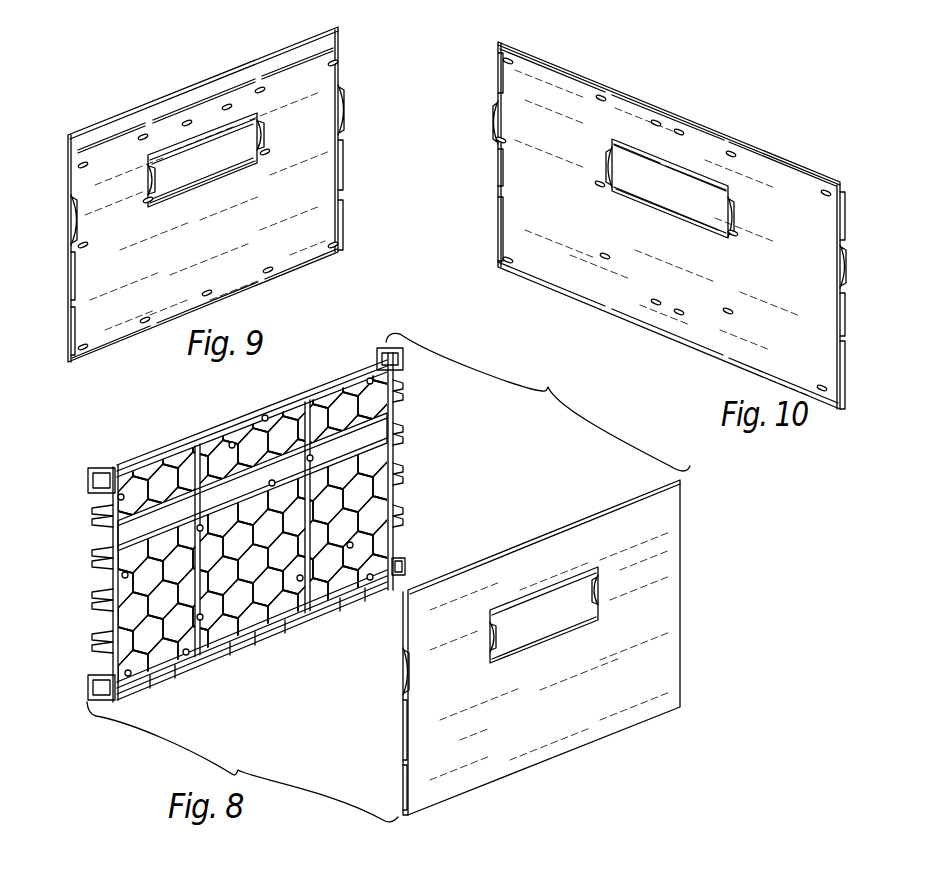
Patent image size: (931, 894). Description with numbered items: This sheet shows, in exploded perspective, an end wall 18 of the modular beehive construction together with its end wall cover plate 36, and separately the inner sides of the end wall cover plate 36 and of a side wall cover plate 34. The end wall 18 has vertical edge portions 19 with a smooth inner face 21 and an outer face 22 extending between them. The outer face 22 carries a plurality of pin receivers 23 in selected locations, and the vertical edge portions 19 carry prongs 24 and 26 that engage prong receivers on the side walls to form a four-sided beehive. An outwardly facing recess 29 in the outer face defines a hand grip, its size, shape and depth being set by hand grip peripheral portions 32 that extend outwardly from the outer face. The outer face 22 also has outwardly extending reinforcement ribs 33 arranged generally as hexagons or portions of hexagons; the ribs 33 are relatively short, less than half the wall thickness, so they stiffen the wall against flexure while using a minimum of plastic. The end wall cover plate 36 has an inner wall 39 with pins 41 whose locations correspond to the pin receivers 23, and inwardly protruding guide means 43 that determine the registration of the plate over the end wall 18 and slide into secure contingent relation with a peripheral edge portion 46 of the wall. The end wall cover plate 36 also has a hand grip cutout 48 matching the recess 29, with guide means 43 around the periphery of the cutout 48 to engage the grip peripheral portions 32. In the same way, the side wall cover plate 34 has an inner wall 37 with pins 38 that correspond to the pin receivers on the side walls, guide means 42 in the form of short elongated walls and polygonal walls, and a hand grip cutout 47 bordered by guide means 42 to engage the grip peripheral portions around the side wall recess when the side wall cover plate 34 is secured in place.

In FIG. 8, the end wall 18 is at (243, 564).
In FIG. 8, the vertical edge portion 19 is at (390, 427).
In FIG. 8, the inner face 21 is at (305, 379).
In FIG. 8, the outer face 22 is at (173, 512).
In FIG. 8, the pin receiver 23 is at (360, 372).
In FIG. 8, the prong 24 is at (402, 362).
In FIG. 8, the prong 26 is at (92, 505).
In FIG. 8, the recess 29 is at (375, 490).
In FIG. 8, the hand grip peripheral portion 32 is at (300, 466).
In FIG. 8, the reinforcement rib 33 is at (165, 470).
In FIG. 10, the side wall cover plate 34 is at (806, 160).
In FIG. 9, the end wall cover plate 36 is at (338, 76).
In FIG. 8, the end wall cover plate 36 is at (680, 598).
In FIG. 10, the inner wall 37 is at (786, 221).
In FIG. 10, the pin 38 is at (606, 96).
In FIG. 9, the inner wall 39 is at (308, 183).
In FIG. 8, the inner wall 39 is at (614, 503).
In FIG. 9, the pin 41 is at (144, 134).
In FIG. 10, the guide means 42 is at (563, 58).
In FIG. 9, the guide means 43 is at (205, 93).
In FIG. 8, the guide means 43 is at (592, 585).
In FIG. 8, the peripheral edge portion 46 is at (396, 440).
In FIG. 10, the hand grip cutout 47 is at (670, 220).
In FIG. 9, the hand grip cutout 48 is at (200, 192).
In FIG. 8, the hand grip cutout 48 is at (489, 640).